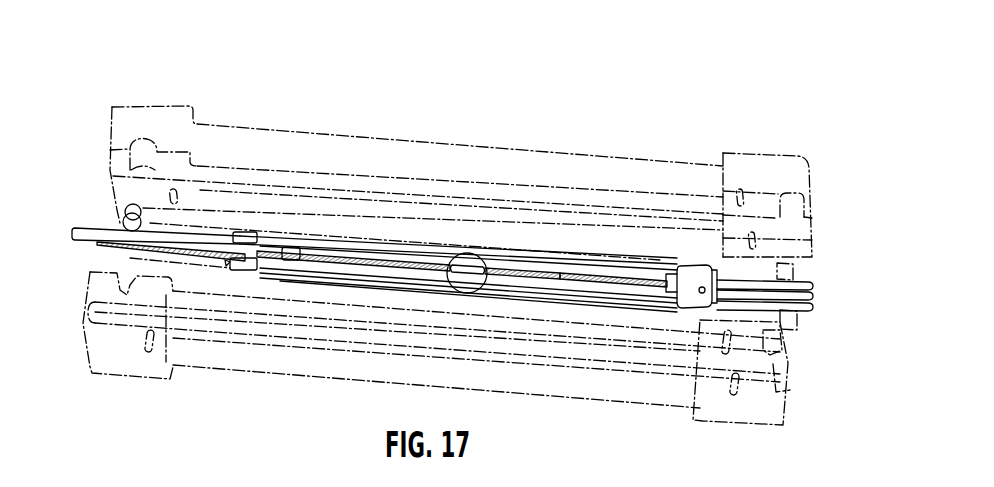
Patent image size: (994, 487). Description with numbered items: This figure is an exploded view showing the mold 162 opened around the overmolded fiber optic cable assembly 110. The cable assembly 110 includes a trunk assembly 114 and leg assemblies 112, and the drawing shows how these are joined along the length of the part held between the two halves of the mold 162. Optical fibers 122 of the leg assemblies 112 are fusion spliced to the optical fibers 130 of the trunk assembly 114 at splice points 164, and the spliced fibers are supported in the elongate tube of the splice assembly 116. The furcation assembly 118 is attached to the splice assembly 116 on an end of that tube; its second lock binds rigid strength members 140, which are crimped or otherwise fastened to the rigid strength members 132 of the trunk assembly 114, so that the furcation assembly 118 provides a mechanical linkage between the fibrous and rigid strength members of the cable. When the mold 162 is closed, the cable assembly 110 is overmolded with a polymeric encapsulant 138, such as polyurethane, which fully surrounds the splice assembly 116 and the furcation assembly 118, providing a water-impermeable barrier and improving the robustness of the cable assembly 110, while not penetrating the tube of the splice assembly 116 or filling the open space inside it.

The fiber optic cable assembly 110 is at (827, 185).
The leg assembly 112 is at (815, 302).
The trunk assembly 114 is at (85, 228).
The splice assembly 116 is at (536, 268).
The furcation assembly 118 is at (697, 273).
The optical fiber 122 is at (562, 270).
The optical fibers 130 is at (343, 253).
The strength members 132 is at (216, 258).
The polymeric encapsulant 138 is at (383, 250).
The rigid strength members 140 is at (433, 298).
The mold 162 is at (155, 130).
The splice points 164 is at (505, 272).